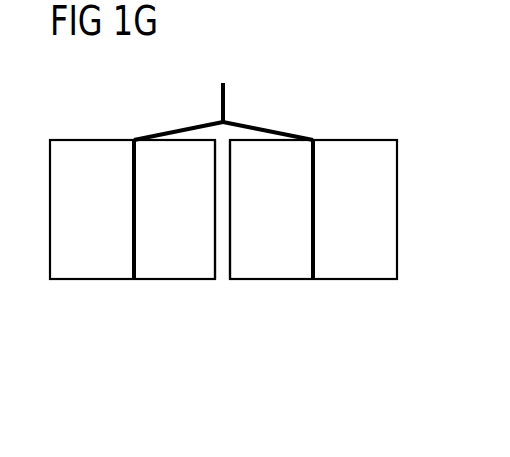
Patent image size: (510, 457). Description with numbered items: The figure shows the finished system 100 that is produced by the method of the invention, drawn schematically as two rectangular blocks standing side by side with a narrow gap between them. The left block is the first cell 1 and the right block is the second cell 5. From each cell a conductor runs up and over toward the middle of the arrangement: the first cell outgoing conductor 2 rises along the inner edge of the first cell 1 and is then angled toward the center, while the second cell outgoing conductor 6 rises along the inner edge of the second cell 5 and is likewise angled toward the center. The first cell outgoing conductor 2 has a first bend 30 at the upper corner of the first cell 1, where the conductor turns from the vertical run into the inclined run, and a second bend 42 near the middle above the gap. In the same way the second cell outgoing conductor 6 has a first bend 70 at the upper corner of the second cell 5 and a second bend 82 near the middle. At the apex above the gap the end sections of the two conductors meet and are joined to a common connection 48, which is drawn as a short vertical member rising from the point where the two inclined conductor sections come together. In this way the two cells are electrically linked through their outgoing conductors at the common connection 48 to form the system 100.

The first cell 1 is at (110, 303).
The second cell 5 is at (335, 302).
The system 100 is at (223, 242).
The first bend 30 is at (125, 130).
The first bend 70 is at (322, 130).
The first cell outgoing conductor 2 is at (163, 133).
The second cell outgoing conductor 6 is at (270, 131).
The common connection 48 is at (217, 88).
The second bend 42 is at (223, 235).
The second bend 82 is at (224, 152).